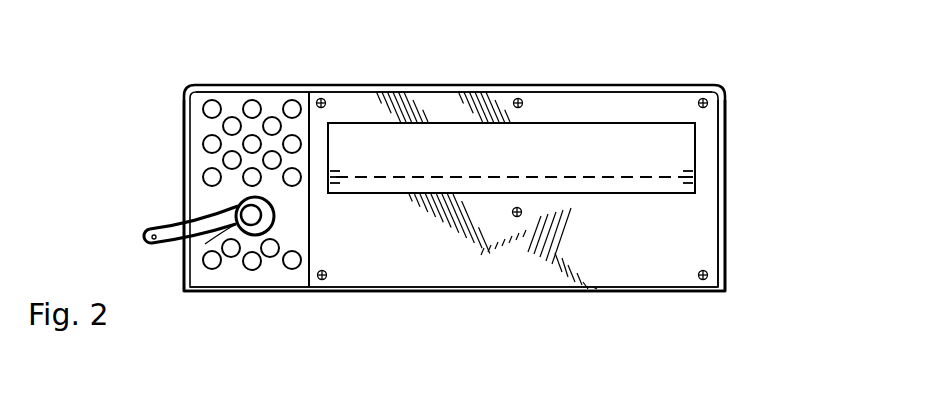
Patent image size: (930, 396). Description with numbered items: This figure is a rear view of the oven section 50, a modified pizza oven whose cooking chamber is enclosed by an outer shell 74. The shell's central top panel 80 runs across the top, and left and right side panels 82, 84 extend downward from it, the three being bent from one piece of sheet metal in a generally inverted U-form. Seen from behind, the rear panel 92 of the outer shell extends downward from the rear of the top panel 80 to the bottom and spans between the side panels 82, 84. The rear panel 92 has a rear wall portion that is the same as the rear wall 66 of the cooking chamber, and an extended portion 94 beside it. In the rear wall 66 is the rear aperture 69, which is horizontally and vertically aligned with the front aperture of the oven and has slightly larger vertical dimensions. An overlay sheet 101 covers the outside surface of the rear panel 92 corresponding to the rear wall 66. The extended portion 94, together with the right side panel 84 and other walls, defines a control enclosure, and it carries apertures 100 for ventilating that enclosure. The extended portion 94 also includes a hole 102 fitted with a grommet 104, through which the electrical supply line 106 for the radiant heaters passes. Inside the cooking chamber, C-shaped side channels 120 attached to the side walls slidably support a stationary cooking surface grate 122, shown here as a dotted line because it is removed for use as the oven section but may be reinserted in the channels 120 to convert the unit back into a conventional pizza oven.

The oven section 50 is at (530, 76).
The rear wall 66 is at (660, 287).
The rear aperture 69 is at (600, 135).
The outer shell 74 is at (382, 84).
The top panel 80 is at (292, 84).
The left side panel 82 is at (725, 240).
The right side panel 84 is at (183, 163).
The rear panel 92 is at (428, 282).
The extended portion 94 is at (258, 280).
The apertures 100 is at (292, 270).
The overlay sheet 101 is at (500, 282).
The hole 102 is at (246, 240).
The grommet 104 is at (228, 228).
The electrical supply line 106 is at (165, 225).
The side channels 120 is at (685, 178).
The cooking surface grate 122 is at (683, 155).